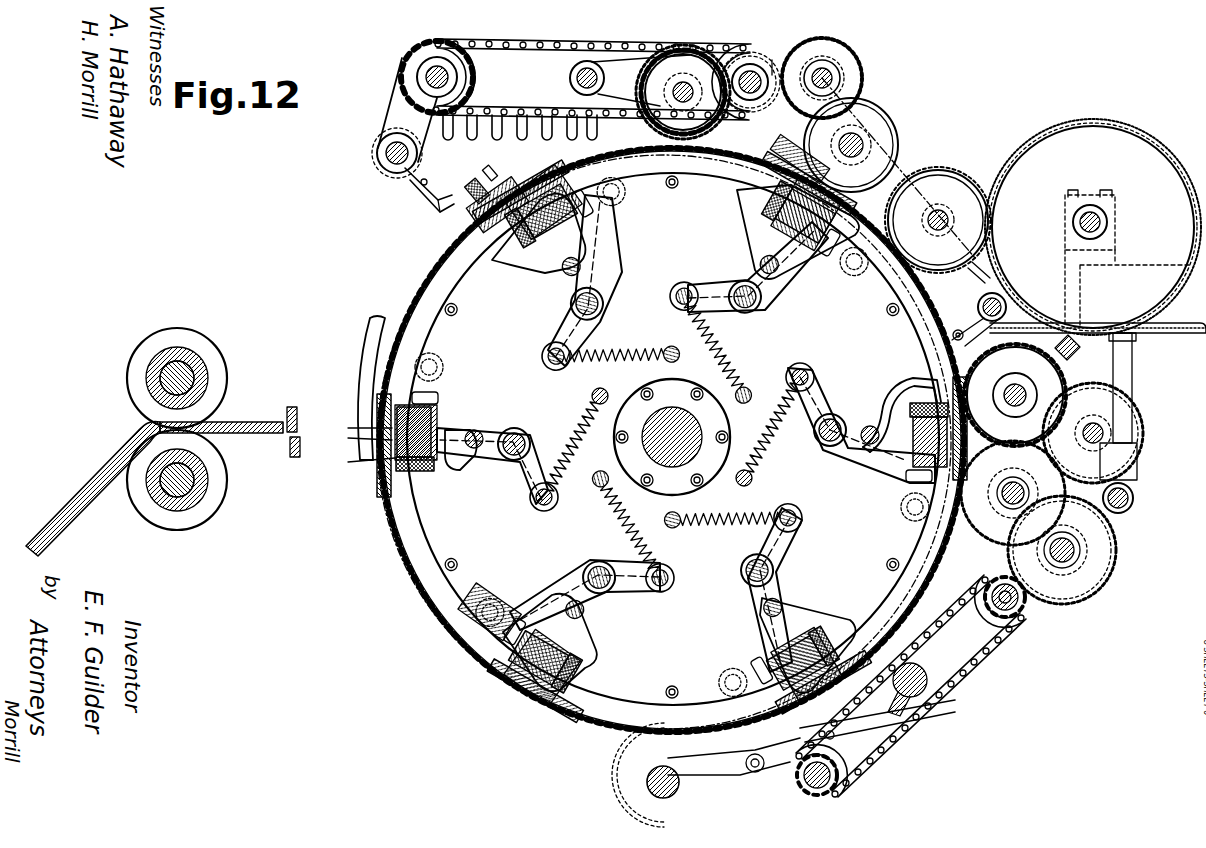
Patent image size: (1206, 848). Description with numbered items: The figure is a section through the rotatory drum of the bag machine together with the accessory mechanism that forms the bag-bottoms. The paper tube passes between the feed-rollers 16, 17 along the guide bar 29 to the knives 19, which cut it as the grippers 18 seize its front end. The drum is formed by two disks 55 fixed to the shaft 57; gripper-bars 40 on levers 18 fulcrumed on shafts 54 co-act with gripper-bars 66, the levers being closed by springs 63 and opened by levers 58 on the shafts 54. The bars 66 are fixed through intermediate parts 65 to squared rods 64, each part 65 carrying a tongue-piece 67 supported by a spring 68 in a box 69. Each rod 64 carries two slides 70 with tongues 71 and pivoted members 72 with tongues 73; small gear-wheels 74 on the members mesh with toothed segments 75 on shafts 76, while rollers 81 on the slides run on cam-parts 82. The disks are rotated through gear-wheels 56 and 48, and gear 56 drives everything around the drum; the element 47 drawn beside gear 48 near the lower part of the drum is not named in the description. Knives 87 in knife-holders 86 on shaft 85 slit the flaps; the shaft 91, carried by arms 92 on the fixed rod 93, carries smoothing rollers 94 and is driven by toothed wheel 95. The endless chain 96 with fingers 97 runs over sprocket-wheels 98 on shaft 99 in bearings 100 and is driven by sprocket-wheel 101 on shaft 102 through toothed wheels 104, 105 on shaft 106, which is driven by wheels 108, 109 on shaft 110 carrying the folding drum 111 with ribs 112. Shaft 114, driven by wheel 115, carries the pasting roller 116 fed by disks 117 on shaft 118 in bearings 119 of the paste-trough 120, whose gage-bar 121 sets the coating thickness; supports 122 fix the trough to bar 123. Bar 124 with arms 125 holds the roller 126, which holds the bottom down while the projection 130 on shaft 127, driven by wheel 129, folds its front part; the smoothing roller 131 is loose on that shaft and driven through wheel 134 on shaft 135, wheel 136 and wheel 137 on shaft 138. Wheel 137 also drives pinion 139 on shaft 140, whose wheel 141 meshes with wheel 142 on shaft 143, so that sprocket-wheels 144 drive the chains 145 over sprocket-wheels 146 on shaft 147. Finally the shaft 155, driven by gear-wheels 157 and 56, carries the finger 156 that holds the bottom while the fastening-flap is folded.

The feed-roller 16 is at (177, 378).
The feed-roller 17 is at (177, 480).
The gripper lever 18 is at (686, 433).
The knife 19 is at (293, 420).
The guide bar 29 is at (154, 478).
The gripper-bar 40 is at (672, 437).
The roller 47 is at (668, 790).
The gear-wheel 48 is at (638, 775).
The shaft 54 is at (600, 308).
The disk 55 is at (673, 439).
The gear-wheel 56 is at (670, 440).
The shaft 57 is at (672, 437).
The lever 58 is at (672, 436).
The spring 63 is at (672, 437).
The squared rod 64 is at (428, 466).
The intermediate part 65 is at (408, 472).
The gripper-bar 66 is at (365, 488).
The tongue-piece 67 is at (480, 218).
The spring 68 is at (415, 470).
The box 69 is at (422, 468).
The slide 70 is at (619, 435).
The tongue 71 is at (548, 710).
The member 72 is at (410, 581).
The tongue 73 is at (429, 603).
The small gear-wheel 74 is at (515, 680).
The toothed segment 75 is at (925, 378).
The shaft 76 is at (562, 278).
The roller 81 is at (336, 481).
The cam-part 82 is at (368, 378).
The shaft 85 is at (386, 156).
The knife-holder 86 is at (431, 186).
The knife 87 is at (442, 204).
The shaft 91 is at (683, 92).
The arm 92 is at (641, 80).
The fixed rod 93 is at (578, 78).
The roller 94 is at (671, 92).
The toothed wheel 95 is at (691, 92).
The endless chain 96 is at (592, 70).
The finger 97 is at (526, 132).
The sprocket-wheel 98 is at (447, 77).
The shaft 99 is at (437, 72).
The bearing 100 is at (407, 110).
The sprocket-wheel 101 is at (750, 69).
The shaft 102 is at (752, 78).
The toothed wheel 104 is at (772, 60).
The toothed wheel 105 is at (835, 72).
The shaft 106 is at (826, 76).
The toothed wheel 108 is at (857, 78).
The toothed wheel 109 is at (884, 138).
The shaft 110 is at (860, 142).
The folding drum 111 is at (851, 145).
The folding-bar 112 is at (799, 158).
The shaft 114 is at (948, 216).
The toothed wheel 115 is at (938, 211).
The pasting roller 116 is at (938, 220).
The disk 117 is at (1093, 227).
The shaft 118 is at (1095, 222).
The bearing 119 is at (1127, 257).
The paste-trough 120 is at (1098, 317).
The gage-bar 121 is at (1074, 227).
The support 122 is at (1130, 406).
The bar 123 is at (1137, 498).
The bar 124 is at (996, 316).
The arm 125 is at (982, 337).
The roller 126 is at (979, 307).
The shaft 127 is at (1028, 387).
The toothed wheel 129 is at (1015, 391).
The projection 130 is at (1083, 352).
The smoothing roller 131 is at (1015, 403).
The toothed wheel 134 is at (1093, 433).
The shaft 135 is at (1098, 433).
The toothed wheel 136 is at (1128, 433).
The toothed wheel 137 is at (1013, 493).
The shaft 138 is at (1010, 498).
The pinion 139 is at (1065, 550).
The shaft 140 is at (1068, 553).
The toothed wheel 141 is at (1081, 566).
The toothed wheel 142 is at (1010, 603).
The shaft 143 is at (1033, 618).
The sprocket-wheel 144 is at (987, 605).
The chain 145 is at (912, 686).
The sprocket-wheel 146 is at (771, 754).
The shaft 147 is at (825, 780).
The shaft 155 is at (928, 690).
The finger 156 is at (912, 718).
The gear-wheel 157 is at (896, 741).